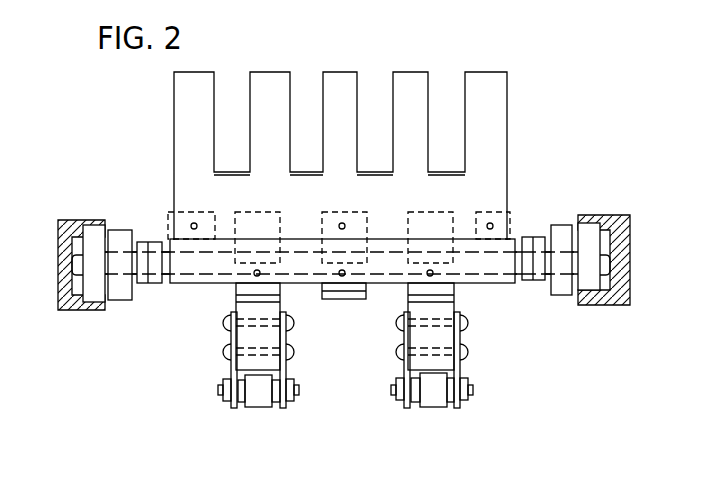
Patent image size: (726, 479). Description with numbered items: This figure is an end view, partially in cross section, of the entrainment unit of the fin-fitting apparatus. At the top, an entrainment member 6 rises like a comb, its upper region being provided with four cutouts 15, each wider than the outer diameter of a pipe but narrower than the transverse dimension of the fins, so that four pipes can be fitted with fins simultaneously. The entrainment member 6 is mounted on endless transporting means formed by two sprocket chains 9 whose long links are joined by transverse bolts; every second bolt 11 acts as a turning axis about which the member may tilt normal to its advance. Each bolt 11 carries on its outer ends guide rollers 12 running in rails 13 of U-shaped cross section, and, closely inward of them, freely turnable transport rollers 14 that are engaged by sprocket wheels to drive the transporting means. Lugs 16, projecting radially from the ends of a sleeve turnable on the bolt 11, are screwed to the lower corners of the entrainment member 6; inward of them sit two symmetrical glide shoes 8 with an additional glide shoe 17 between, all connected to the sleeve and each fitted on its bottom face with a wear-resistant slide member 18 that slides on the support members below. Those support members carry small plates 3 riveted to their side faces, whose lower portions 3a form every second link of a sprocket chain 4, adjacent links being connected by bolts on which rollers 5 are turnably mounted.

The plate 3 is at (405, 338).
The lower portion of plate 3a is at (458, 403).
The sprocket chain 4 is at (471, 390).
The roller 5 is at (256, 393).
The entrainment member 6 is at (490, 98).
The glide shoe 8 is at (243, 211).
The sprocket chain 9 is at (141, 241).
The bolt 11 is at (296, 265).
The roller 12 is at (90, 229).
The rail 13 is at (66, 227).
The transport roller 14 is at (118, 231).
The cutout 15 is at (443, 80).
The lug 16 is at (178, 212).
The additional glide shoe 17 is at (322, 222).
The slide member 18 is at (243, 296).